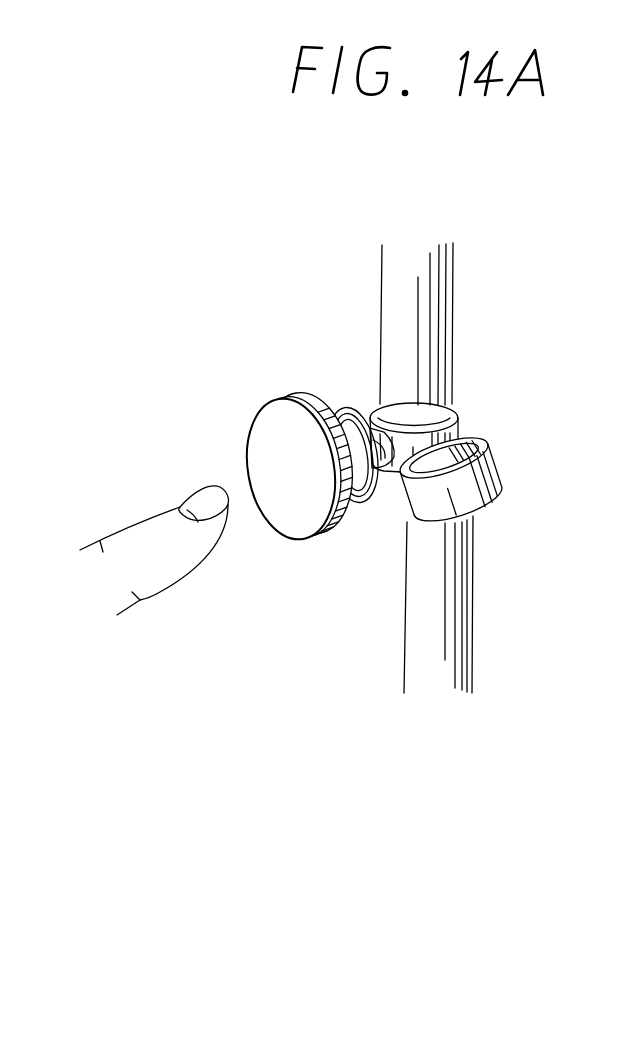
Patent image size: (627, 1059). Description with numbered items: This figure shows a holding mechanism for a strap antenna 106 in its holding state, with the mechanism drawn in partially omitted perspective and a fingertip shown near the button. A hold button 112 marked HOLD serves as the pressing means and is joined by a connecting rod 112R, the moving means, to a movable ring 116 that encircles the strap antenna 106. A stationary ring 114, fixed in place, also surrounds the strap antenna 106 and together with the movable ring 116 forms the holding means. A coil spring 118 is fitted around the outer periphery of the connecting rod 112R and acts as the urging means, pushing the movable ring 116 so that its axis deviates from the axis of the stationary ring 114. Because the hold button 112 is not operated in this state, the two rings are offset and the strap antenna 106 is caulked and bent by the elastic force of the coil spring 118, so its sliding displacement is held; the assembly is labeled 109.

The strap antenna 106 is at (438, 271).
The hold button 112 is at (275, 413).
The connecting rod 112R is at (388, 462).
The stationary ring 114 is at (467, 488).
The movable ring 116 is at (460, 428).
The coil spring 118 is at (347, 407).
The pole assembly 109 is at (597, 783).